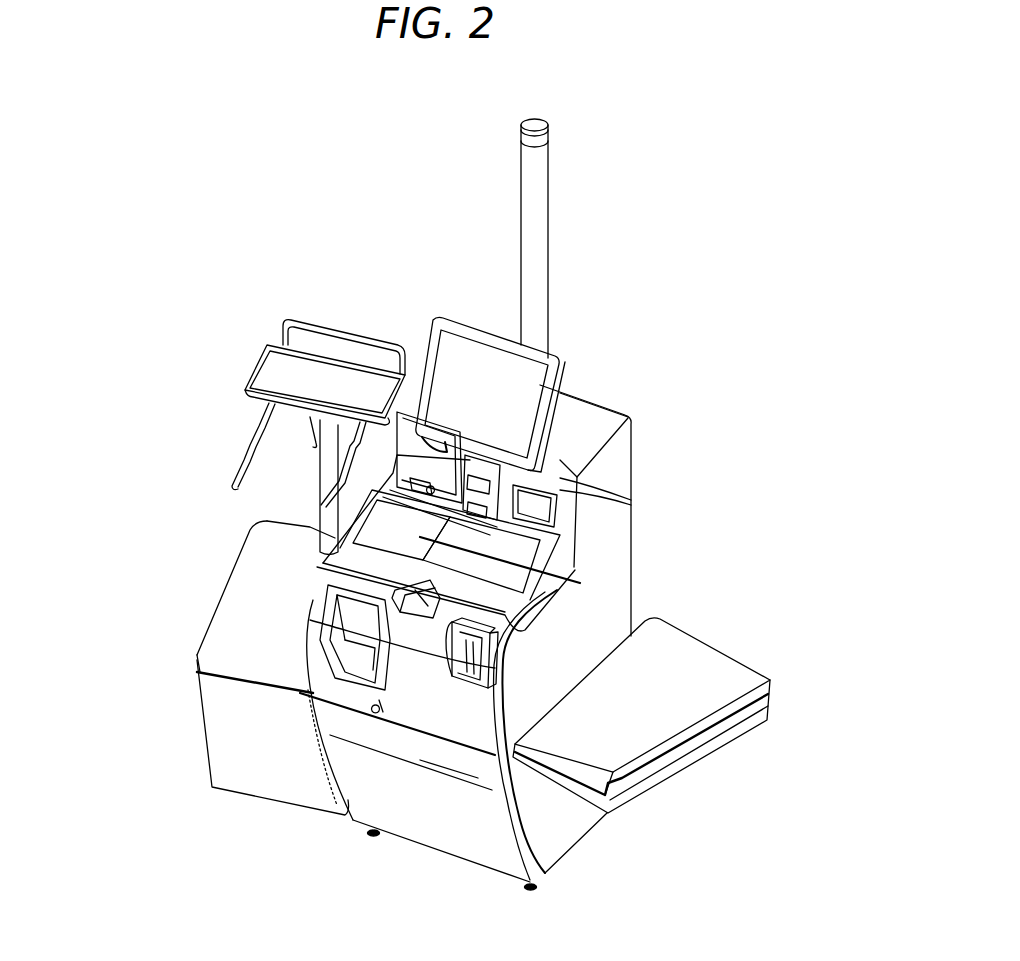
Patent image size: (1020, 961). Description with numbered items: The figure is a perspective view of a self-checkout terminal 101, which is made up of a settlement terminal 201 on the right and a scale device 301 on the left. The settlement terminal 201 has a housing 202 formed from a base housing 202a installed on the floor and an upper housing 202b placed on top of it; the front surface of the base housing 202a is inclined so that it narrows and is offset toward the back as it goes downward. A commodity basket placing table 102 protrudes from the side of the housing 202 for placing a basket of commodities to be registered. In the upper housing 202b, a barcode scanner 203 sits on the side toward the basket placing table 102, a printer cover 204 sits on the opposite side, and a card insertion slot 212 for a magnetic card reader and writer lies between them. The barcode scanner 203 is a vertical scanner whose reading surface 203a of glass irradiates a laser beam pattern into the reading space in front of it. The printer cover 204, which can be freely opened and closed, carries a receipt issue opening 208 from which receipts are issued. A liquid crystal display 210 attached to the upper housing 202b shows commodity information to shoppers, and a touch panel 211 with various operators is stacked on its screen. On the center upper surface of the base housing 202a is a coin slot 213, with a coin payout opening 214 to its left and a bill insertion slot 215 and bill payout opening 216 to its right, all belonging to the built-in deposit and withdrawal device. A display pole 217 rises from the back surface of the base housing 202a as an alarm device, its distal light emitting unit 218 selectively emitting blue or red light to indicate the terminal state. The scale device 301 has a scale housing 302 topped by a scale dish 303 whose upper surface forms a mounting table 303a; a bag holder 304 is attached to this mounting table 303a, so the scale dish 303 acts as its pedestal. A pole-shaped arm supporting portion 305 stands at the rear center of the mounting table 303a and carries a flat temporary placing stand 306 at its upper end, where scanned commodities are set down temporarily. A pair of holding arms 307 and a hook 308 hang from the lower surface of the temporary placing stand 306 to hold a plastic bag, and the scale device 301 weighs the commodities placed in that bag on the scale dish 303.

The self-checkout terminal 101 is at (379, 142).
The commodity basket placing table 102 is at (735, 668).
The settlement terminal 201 is at (632, 258).
The housing 202 is at (607, 590).
The base housing 202a is at (478, 773).
The upper housing 202b is at (620, 472).
The barcode scanner 203 is at (610, 530).
The reading surface 203a is at (610, 503).
The printer cover 204 is at (405, 420).
The receipt issue opening 208 is at (462, 440).
The liquid crystal display 210 is at (505, 368).
The touch panel 211 is at (515, 396).
The card insertion slot 212 is at (545, 495).
The coin slot 213 is at (400, 622).
The coin payout opening 214 is at (357, 680).
The bill insertion slot 215 is at (492, 680).
The bill payout opening 216 is at (470, 680).
The display pole 217 is at (545, 195).
The light emitting unit 218 is at (520, 133).
The scale device 301 is at (333, 300).
The scale housing 302 is at (225, 753).
The scale dish 303 is at (235, 597).
The mounting table 303a is at (240, 628).
The bag holder 304 is at (197, 400).
The arm supporting portion 305 is at (330, 533).
The temporary placing stand 306 is at (282, 368).
The holding arm 307 is at (343, 482).
The hook 308 is at (313, 447).